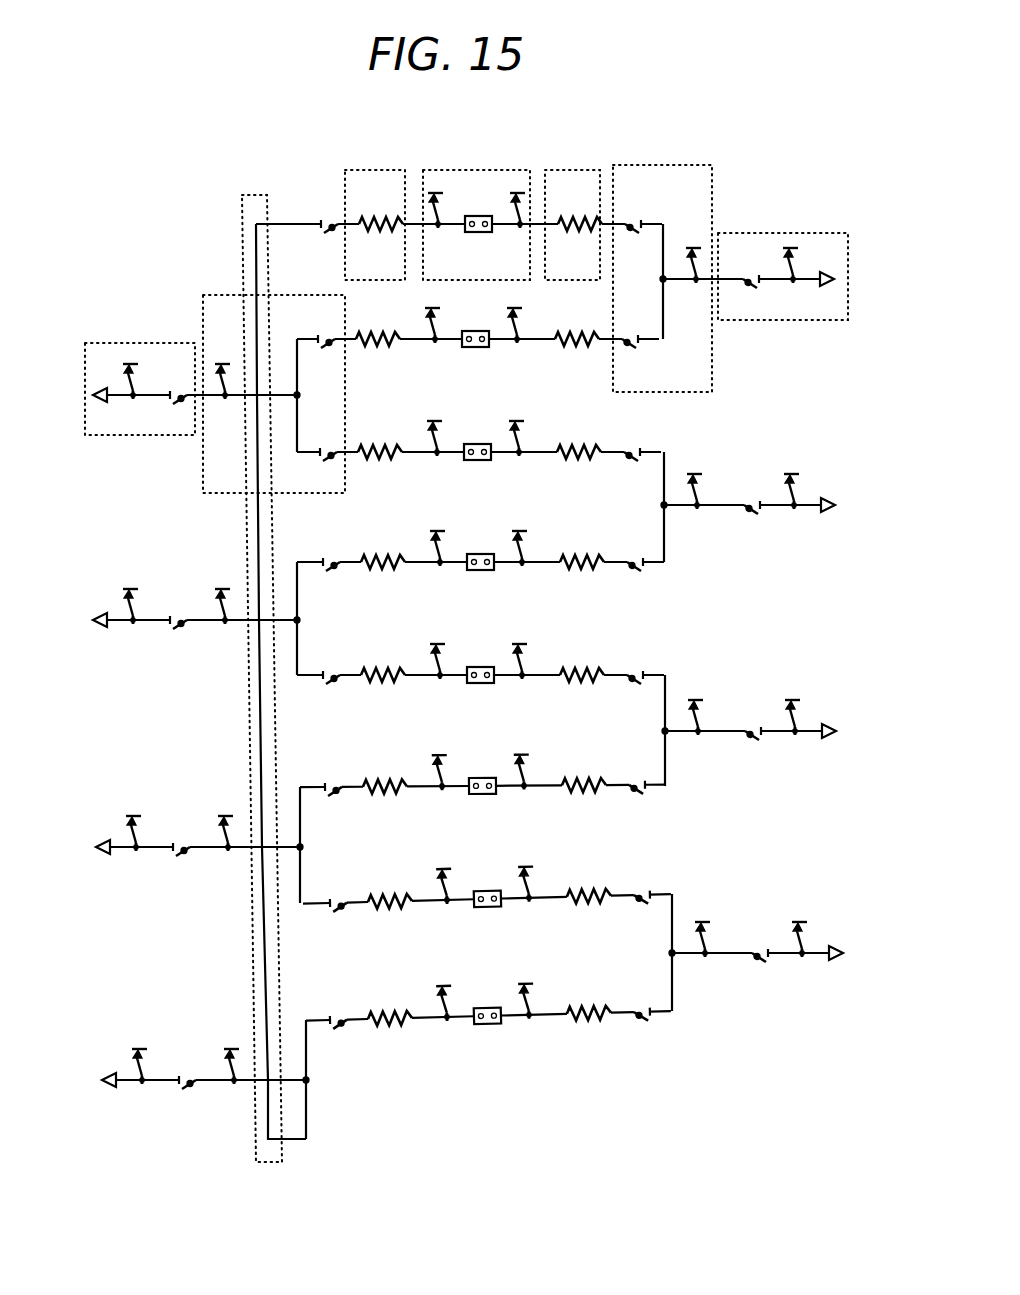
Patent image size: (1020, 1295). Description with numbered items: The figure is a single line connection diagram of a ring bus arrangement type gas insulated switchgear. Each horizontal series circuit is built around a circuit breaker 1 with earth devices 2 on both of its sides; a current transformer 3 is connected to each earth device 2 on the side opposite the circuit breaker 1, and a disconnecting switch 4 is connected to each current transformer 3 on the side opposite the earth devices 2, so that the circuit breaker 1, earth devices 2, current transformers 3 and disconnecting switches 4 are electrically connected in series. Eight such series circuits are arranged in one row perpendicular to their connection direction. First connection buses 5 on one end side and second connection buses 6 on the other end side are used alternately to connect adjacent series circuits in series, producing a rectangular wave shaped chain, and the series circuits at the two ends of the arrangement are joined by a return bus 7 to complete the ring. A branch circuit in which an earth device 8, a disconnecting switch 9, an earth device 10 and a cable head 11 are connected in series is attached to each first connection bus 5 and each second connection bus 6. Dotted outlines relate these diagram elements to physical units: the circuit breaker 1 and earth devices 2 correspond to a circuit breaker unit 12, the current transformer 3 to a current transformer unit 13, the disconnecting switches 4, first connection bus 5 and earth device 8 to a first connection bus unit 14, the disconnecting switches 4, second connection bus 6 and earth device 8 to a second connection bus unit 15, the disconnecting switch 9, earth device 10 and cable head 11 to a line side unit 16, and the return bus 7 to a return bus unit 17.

The circuit breaker 1 is at (481, 600).
The earth device 2 is at (493, 578).
The current transformer 3 is at (483, 601).
The disconnecting switch 4 is at (484, 588).
The first connection bus 5 is at (663, 238).
The second connection bus 6 is at (292, 222).
The return bus 7 is at (262, 540).
The earth device 8 is at (696, 246).
The disconnecting switch 9 is at (745, 276).
The earth device 10 is at (798, 252).
The cable head 11 is at (825, 287).
The circuit breaker unit 12 is at (478, 168).
The current transformer unit 13 is at (375, 168).
The first connection bus unit 14 is at (655, 165).
The second connection bus unit 15 is at (205, 300).
The line side unit 16 is at (850, 272).
The return bus unit 17 is at (245, 235).